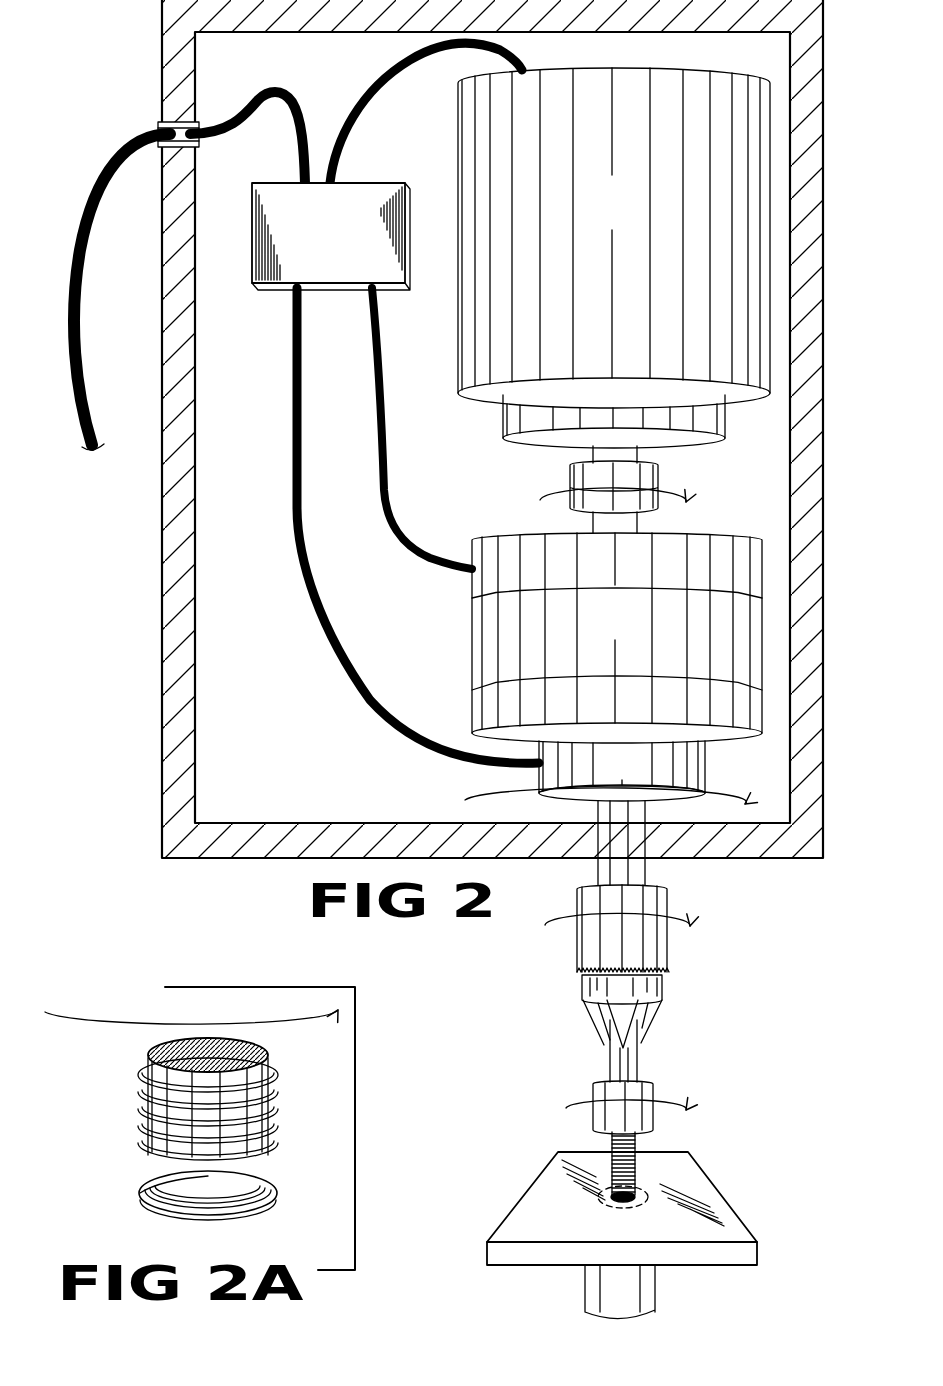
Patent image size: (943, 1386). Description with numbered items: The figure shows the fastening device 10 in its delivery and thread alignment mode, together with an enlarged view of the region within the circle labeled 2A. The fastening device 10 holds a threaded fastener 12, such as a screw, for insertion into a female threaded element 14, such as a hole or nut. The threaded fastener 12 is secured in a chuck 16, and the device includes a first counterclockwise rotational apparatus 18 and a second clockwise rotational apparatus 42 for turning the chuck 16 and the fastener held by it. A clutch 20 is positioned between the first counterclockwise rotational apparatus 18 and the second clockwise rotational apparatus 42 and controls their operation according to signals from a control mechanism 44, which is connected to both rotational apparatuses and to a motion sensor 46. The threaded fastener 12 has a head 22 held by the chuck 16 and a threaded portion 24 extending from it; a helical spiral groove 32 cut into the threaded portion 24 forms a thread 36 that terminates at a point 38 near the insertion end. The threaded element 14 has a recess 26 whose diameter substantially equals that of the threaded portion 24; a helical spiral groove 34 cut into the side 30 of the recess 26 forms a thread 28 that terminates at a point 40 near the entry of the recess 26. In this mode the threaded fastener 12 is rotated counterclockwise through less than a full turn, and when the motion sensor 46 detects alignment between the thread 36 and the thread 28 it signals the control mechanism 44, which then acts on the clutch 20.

In FIG. 2, the fastening device 10 is at (134, 42).
In FIG. 2, the threaded fastener 12 is at (619, 1107).
In FIG. 2, the female threaded element 14 is at (632, 1210).
In FIG. 2, the chuck 16 is at (585, 1012).
In FIG. 2, the first counterclockwise rotational apparatus 18 is at (640, 627).
In FIG. 2, the clutch 20 is at (660, 470).
In FIG. 2, the head 22 is at (593, 1088).
In FIG. 2, the threaded portion 24 is at (612, 1140).
In FIG. 2A, the threaded portion 24 is at (272, 1097).
In FIG. 2, the recess 26 is at (632, 1200).
In FIG. 2A, the recess 26 is at (275, 1182).
In FIG. 2A, the thread 28 is at (215, 1172).
In FIG. 2A, the side 30 is at (196, 1200).
In FIG. 2A, the helical spiral groove 32 is at (272, 1068).
In FIG. 2A, the helical spiral groove 34 is at (150, 1188).
In FIG. 2A, the thread 36 is at (272, 1130).
In FIG. 2A, the point 38 is at (199, 1097).
In FIG. 2A, the point 40 is at (140, 1182).
In FIG. 2, the second clockwise rotational apparatus 42 is at (640, 221).
In FIG. 2, the control mechanism 44 is at (272, 292).
In FIG. 2, the motion sensor 46 is at (640, 776).
In FIG. 2, the circle labeled 2A is at (604, 1203).